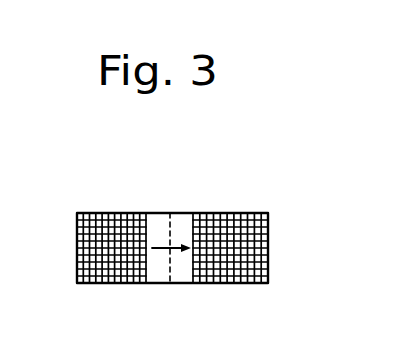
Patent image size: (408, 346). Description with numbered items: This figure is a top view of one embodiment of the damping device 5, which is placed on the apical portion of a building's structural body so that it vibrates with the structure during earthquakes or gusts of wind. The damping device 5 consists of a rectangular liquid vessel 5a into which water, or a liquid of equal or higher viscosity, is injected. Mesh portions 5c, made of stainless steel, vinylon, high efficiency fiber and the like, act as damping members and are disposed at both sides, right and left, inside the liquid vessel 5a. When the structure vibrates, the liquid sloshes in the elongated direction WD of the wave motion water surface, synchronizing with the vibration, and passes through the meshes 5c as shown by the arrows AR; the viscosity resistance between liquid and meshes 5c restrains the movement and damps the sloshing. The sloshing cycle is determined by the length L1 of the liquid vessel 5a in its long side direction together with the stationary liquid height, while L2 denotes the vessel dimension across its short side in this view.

The damping device 5 is at (188, 219).
The liquid vessel 5a is at (268, 218).
The mesh portion 5c is at (173, 234).
The arrows AR is at (156, 237).
The elongated direction of the wave motion water surface WD is at (243, 178).
The length in the long side direction of the liquid vessel L1 is at (267, 290).
The height of filter element L2 is at (68, 213).